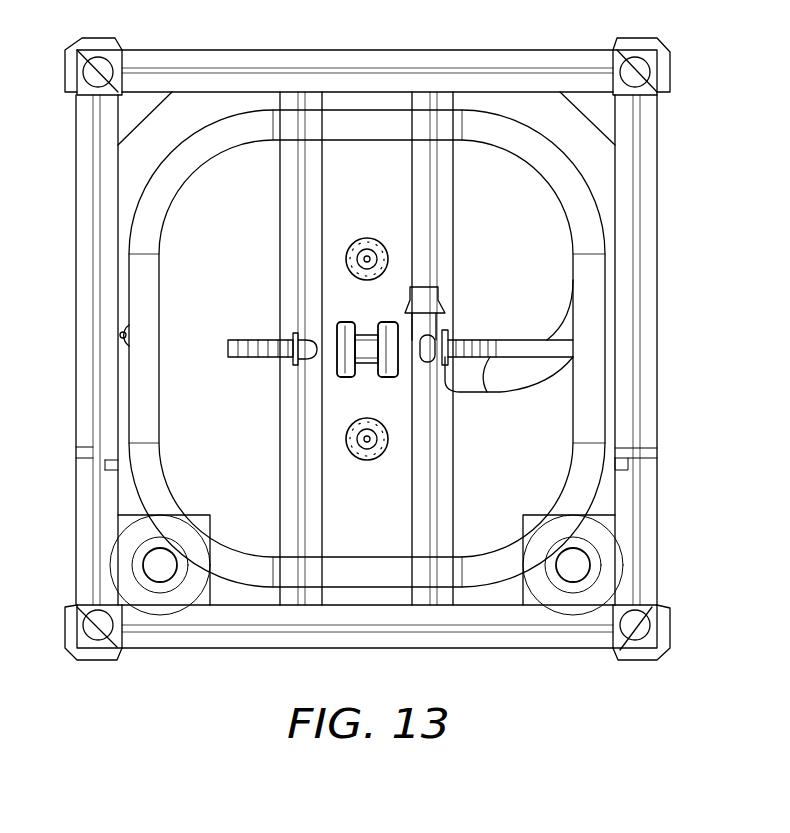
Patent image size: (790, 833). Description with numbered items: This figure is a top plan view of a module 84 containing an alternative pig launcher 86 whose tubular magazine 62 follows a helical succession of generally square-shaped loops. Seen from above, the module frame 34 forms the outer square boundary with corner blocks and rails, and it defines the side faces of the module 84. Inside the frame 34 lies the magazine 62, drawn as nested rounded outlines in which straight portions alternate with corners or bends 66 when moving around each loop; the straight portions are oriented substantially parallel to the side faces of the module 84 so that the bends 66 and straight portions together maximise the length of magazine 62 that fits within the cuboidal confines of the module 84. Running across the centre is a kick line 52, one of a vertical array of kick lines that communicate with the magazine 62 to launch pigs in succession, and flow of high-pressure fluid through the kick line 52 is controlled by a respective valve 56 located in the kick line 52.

The module frame 34 is at (532, 60).
The kick line 52 is at (518, 345).
The valve 56 is at (403, 312).
The magazine 62 is at (137, 290).
The bend 66 is at (193, 163).
The module 84 is at (672, 331).
The pig launcher 86 is at (405, 331).